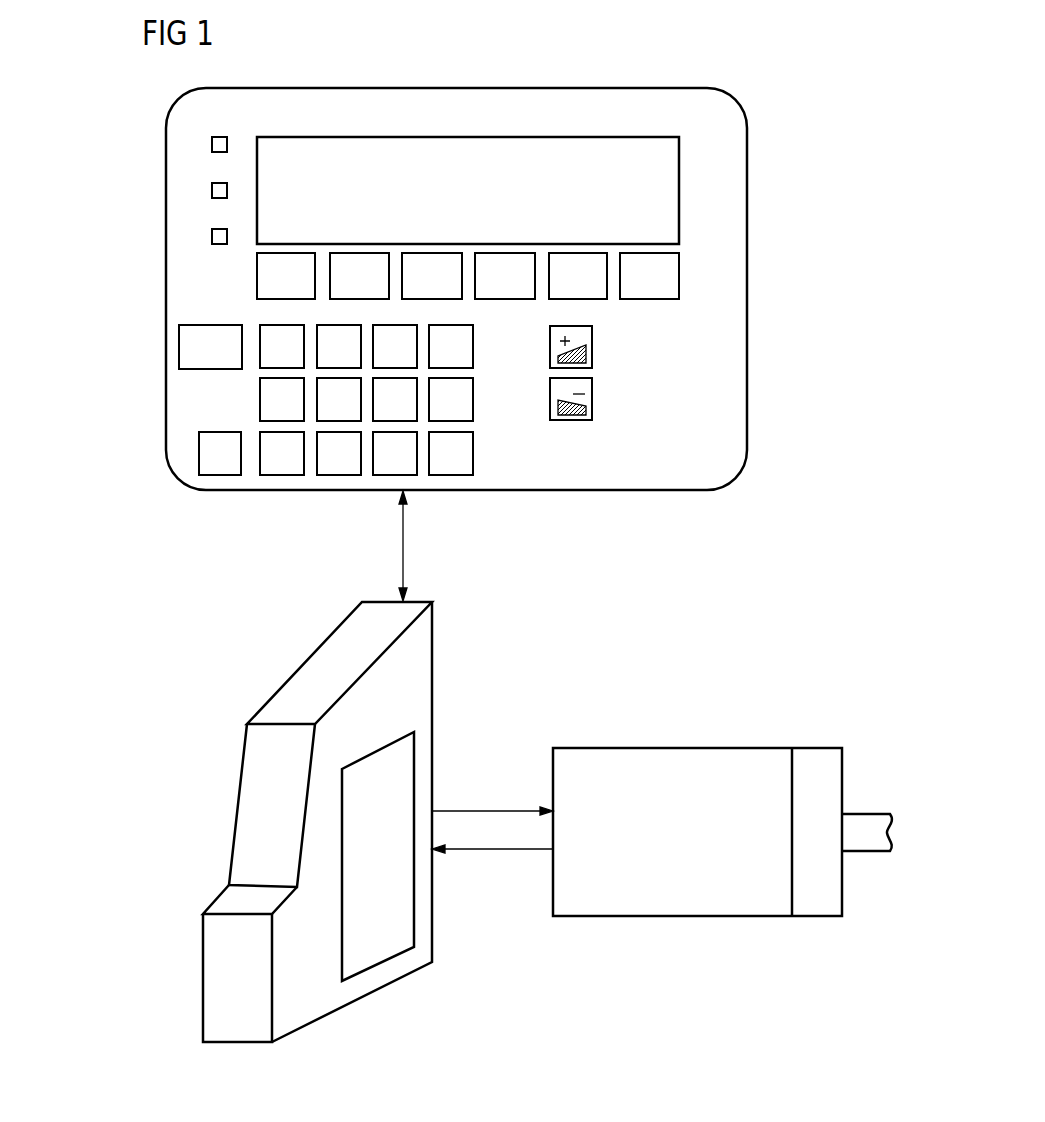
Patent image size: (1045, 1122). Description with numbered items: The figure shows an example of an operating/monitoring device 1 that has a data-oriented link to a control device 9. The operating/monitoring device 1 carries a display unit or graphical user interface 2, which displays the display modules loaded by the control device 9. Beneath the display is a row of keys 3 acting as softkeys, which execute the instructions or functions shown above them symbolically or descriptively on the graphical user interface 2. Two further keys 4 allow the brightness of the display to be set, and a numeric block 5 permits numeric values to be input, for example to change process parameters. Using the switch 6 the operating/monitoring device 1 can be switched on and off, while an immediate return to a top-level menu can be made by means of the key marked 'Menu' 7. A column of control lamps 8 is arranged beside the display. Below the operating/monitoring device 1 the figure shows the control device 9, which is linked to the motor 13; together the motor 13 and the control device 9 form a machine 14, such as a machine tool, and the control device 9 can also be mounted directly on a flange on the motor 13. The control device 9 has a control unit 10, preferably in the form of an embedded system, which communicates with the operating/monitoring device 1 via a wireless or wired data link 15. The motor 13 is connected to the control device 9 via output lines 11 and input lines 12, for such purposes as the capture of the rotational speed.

The operating/monitoring device 1 is at (745, 280).
The graphical user interface 2 is at (677, 190).
The row of keys 3 is at (677, 270).
The keys 4 is at (615, 383).
The numeric block 5 is at (495, 417).
The switch 6 is at (215, 430).
The key marked 'Menu' 7 is at (210, 323).
The control lamps 8 is at (209, 188).
The control device 9 is at (307, 998).
The control unit 10 is at (373, 948).
The output lines 11 is at (490, 809).
The input lines 12 is at (508, 847).
The motor 13 is at (710, 746).
The machine 14 is at (557, 695).
The data link 15 is at (401, 545).